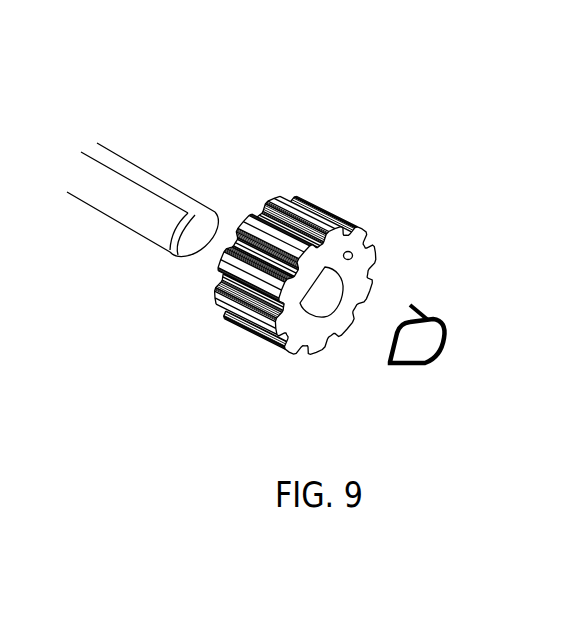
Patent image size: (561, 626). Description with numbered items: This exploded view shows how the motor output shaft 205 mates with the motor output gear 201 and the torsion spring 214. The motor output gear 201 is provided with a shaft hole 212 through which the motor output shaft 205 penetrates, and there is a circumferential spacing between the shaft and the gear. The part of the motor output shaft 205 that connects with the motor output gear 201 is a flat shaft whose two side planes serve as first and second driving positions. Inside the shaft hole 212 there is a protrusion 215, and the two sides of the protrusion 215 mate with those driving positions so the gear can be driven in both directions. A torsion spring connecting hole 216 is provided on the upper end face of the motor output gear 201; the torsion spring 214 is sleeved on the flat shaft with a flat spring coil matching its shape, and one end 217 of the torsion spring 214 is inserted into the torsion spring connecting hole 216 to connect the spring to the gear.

The motor output shaft 205 is at (175, 195).
The motor output gear 201 is at (283, 262).
The shaft hole 212 is at (316, 292).
The protrusion 215 is at (304, 302).
The torsion spring connecting hole 216 is at (350, 250).
The end of the torsion spring 217 is at (420, 307).
The torsion spring 214 is at (433, 283).